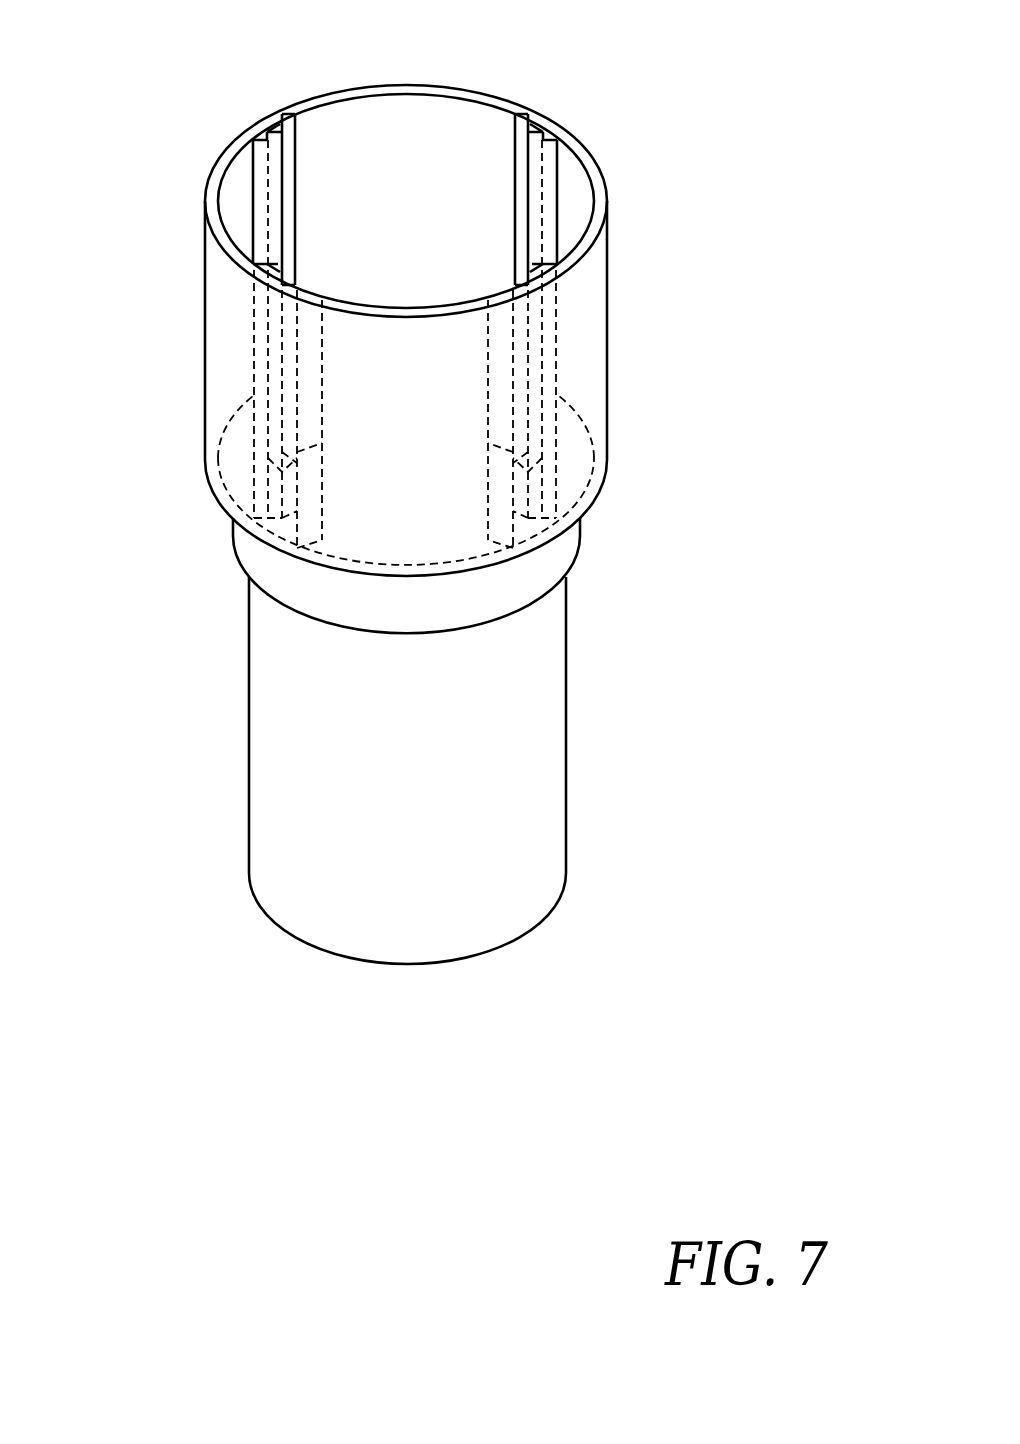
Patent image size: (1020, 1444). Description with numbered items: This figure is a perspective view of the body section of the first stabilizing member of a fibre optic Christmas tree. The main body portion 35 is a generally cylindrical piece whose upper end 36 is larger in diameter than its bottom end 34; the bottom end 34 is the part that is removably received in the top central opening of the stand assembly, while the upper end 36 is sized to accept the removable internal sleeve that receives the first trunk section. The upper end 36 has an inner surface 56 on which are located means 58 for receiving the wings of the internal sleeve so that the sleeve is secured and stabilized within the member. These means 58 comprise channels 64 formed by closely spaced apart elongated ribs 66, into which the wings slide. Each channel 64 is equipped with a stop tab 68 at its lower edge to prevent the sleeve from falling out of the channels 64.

The bottom end 34 is at (566, 698).
The main body portion 35 is at (607, 458).
The upper end 36 is at (607, 197).
The inner surface 56 is at (453, 112).
The means to receive the wings 58 is at (297, 145).
The channels 64 is at (284, 125).
The elongated ribs 66 is at (262, 157).
The stop tab 68 is at (312, 453).